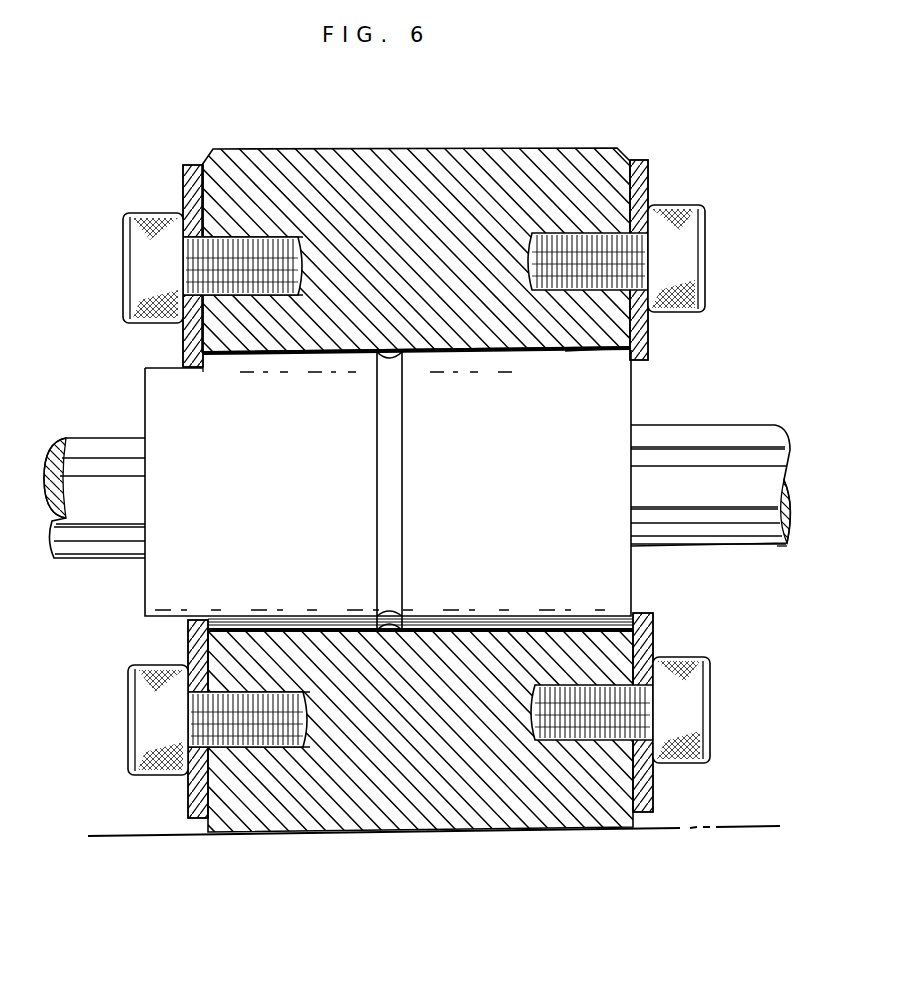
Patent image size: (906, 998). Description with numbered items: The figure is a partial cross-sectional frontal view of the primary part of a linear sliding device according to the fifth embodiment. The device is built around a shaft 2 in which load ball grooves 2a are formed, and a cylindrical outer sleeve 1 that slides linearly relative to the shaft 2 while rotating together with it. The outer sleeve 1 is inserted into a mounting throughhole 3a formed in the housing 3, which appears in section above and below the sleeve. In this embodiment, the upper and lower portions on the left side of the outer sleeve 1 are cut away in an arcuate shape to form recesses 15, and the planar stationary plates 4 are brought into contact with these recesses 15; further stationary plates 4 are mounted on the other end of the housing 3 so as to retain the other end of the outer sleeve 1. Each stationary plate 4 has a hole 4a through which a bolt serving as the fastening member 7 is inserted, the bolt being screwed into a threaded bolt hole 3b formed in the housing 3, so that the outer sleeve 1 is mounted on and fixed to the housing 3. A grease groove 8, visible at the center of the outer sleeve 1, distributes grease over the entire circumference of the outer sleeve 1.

The outer sleeve 1 is at (630, 578).
The shaft 2 is at (788, 540).
The load ball grooves 2a is at (117, 534).
The housing 3 is at (483, 150).
The mounting throughhole 3a is at (566, 342).
The bolt hole 3b is at (274, 240).
The stationary plate 4 is at (183, 183).
The hole 4a is at (645, 222).
The fastening member 7 is at (130, 237).
The grease groove 8 is at (403, 616).
The recesses 15 is at (203, 371).